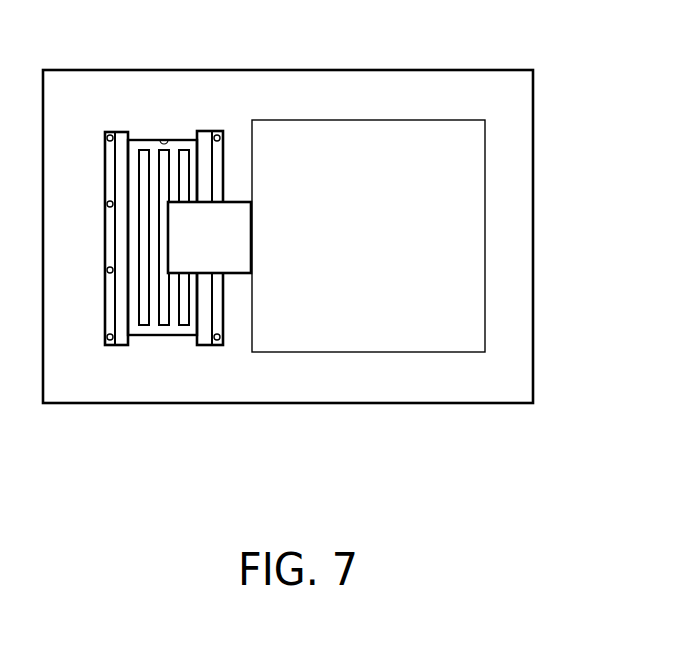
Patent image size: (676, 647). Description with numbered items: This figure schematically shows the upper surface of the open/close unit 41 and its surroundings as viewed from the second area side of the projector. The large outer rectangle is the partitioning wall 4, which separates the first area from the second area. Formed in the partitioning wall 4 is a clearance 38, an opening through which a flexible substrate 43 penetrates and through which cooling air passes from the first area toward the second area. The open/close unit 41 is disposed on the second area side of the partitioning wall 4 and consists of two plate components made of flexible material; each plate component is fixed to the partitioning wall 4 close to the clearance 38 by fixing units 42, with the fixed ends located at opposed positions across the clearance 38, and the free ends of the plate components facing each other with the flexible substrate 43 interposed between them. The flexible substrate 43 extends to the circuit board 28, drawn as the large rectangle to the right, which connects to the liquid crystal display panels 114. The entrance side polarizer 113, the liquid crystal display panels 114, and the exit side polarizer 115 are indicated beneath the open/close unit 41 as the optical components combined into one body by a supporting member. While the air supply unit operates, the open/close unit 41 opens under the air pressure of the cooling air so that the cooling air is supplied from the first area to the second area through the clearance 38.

The partitioning wall 4 is at (508, 85).
The circuit board 28 is at (473, 243).
The clearance 38 is at (164, 140).
The open/close unit 41 is at (122, 131).
The fixing units 42 is at (110, 346).
The flexible substrate 43 is at (237, 266).
The entrance side polarizer 113 is at (145, 326).
The liquid crystal display panels 114 is at (165, 326).
The exit side polarizer 115 is at (185, 326).